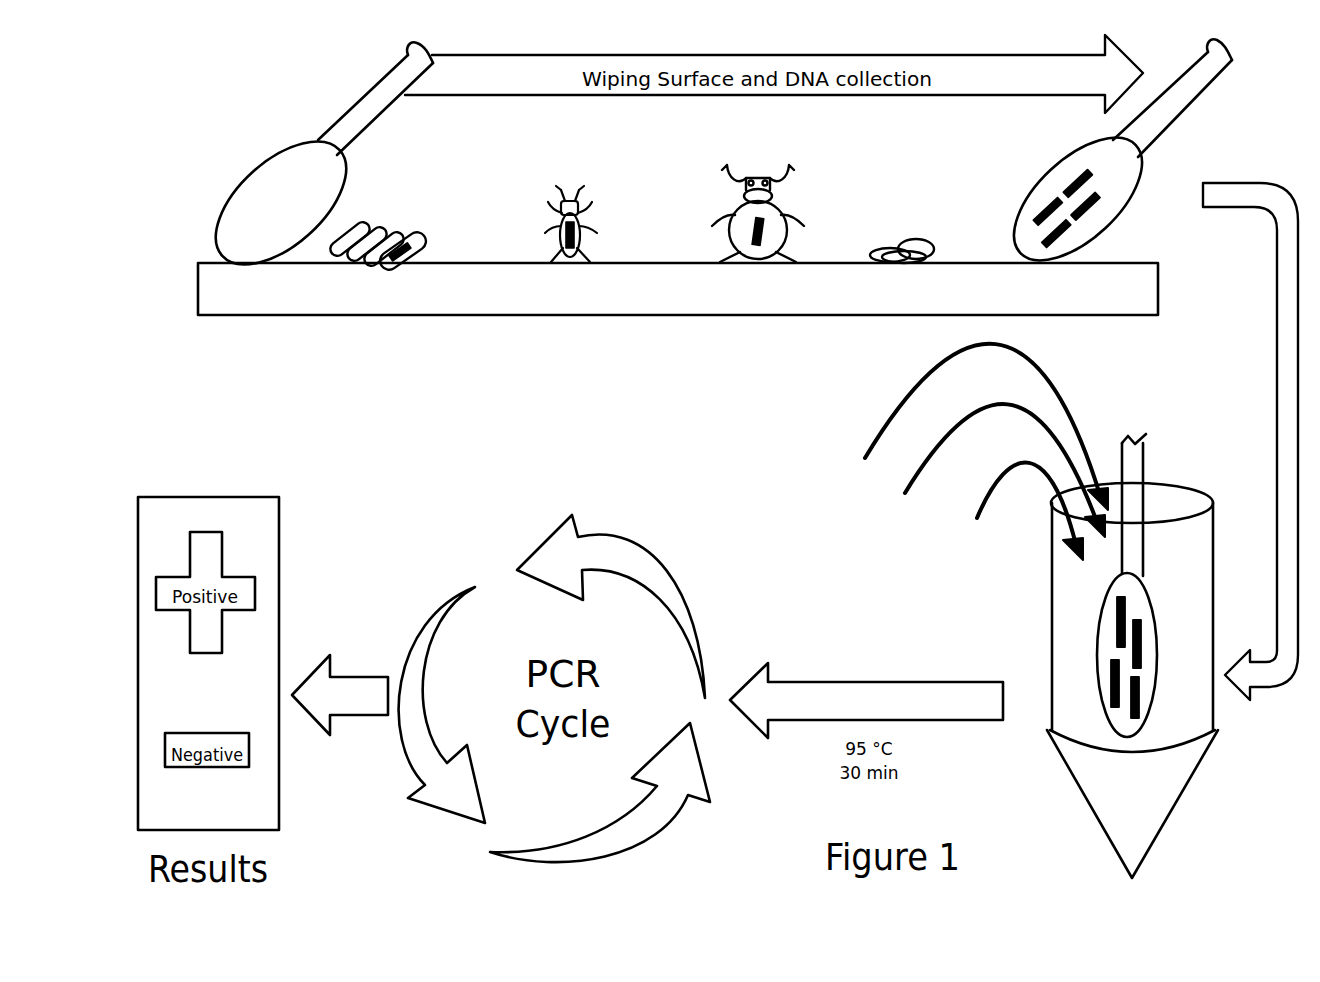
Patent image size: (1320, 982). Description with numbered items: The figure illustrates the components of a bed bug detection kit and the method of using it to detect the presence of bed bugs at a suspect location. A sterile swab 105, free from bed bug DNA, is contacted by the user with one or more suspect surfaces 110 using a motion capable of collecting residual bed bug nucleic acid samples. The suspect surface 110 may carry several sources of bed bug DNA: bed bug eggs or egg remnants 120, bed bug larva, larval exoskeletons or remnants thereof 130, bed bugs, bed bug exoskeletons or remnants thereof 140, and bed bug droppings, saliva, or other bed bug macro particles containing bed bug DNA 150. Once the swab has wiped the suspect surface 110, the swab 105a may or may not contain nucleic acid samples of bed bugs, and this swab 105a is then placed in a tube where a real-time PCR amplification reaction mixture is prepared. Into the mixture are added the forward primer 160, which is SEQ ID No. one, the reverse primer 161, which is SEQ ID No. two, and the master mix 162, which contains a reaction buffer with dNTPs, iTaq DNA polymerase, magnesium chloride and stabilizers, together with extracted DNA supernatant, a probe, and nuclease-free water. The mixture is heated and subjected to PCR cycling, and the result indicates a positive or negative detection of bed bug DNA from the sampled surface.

The sterile swab 105 is at (250, 178).
The swab after contacting suspect surface 105a is at (1037, 187).
The suspect surface 110 is at (538, 315).
The bed bug eggs or egg remnants 120 is at (380, 228).
The bed bug larva or larval exoskeletons 130 is at (587, 205).
The bed bugs or bed bug exoskeletons 140 is at (787, 197).
The bed bug droppings, saliva, or macro particles 150 is at (897, 245).
The forward primer 160 is at (780, 515).
The reverse primer 161 is at (817, 560).
The master mix 162 is at (837, 623).